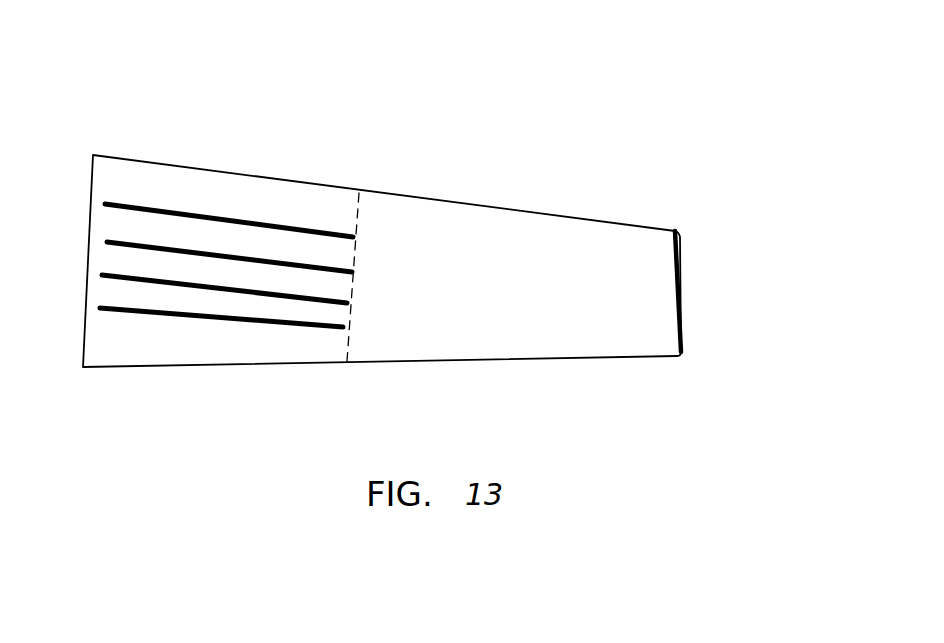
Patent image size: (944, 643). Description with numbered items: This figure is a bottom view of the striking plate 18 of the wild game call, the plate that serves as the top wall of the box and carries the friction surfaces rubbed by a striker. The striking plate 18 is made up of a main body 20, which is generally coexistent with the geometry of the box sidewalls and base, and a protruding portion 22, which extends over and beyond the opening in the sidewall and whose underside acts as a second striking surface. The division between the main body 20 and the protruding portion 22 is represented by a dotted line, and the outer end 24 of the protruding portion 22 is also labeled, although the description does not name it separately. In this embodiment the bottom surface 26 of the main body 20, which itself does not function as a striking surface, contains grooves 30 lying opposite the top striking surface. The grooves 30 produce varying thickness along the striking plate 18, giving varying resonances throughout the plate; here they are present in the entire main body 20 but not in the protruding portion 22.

The striking plate 18 is at (383, 230).
The main body 20 is at (208, 190).
The protruding portion 22 is at (410, 220).
The end portion 24 is at (547, 247).
The bottom surface 26 is at (318, 207).
The grooves 30 is at (212, 215).